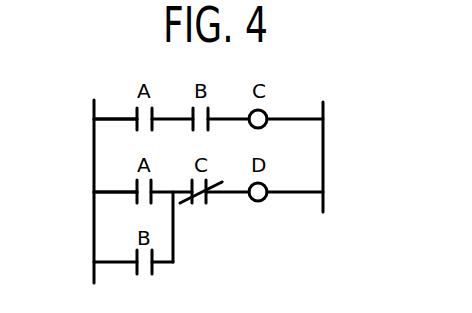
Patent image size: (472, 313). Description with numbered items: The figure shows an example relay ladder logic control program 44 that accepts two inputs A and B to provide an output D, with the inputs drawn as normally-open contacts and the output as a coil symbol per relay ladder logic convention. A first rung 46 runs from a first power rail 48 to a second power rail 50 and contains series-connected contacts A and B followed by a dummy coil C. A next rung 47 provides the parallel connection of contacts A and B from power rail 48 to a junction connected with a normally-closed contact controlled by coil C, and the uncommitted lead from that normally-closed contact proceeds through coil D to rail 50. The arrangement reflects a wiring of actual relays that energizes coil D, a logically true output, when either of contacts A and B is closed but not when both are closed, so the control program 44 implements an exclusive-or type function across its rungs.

The control program 44 is at (340, 117).
The first rung 46 is at (120, 113).
The next rung 47 is at (117, 192).
The first power rail 48 is at (93, 145).
The second power rail 50 is at (323, 150).